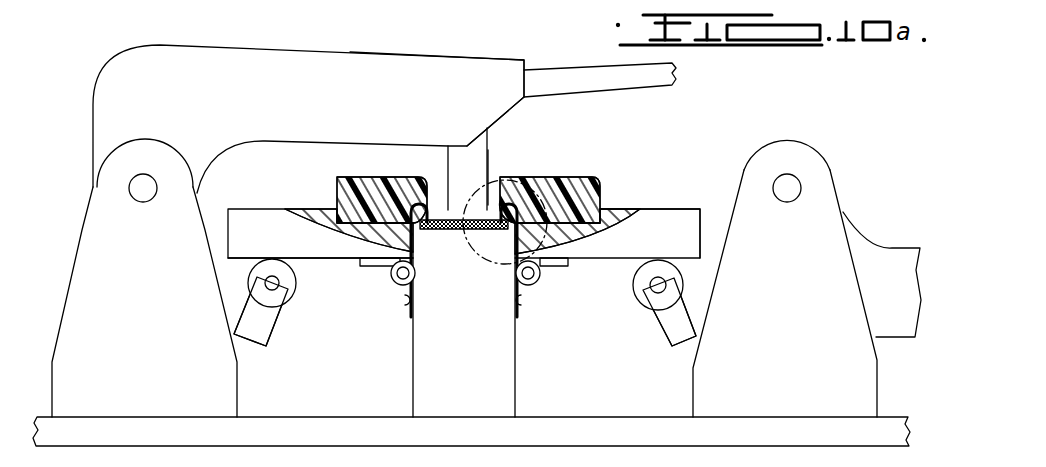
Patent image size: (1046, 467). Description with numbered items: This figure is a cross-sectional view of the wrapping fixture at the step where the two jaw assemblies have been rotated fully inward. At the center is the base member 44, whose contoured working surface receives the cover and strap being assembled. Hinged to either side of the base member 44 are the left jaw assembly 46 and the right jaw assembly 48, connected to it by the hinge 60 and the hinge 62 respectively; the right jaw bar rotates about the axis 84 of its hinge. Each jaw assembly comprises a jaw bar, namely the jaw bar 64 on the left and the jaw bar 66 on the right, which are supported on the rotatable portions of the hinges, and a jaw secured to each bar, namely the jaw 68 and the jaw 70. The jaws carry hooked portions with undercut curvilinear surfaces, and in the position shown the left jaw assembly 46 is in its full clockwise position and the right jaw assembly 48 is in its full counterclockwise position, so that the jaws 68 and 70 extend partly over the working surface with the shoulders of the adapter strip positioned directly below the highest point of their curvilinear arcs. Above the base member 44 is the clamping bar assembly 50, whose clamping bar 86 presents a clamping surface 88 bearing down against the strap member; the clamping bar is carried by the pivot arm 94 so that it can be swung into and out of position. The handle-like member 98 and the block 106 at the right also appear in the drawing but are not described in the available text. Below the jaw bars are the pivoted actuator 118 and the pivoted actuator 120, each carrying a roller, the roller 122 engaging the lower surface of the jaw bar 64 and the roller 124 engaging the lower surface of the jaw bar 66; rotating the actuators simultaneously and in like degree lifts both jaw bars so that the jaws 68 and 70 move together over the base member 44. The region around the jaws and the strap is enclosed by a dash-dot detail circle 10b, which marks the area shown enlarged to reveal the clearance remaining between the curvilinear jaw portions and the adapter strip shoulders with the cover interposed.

The base member 44 is at (478, 348).
The left jaw assembly 46 is at (331, 279).
The right jaw assembly 48 is at (652, 192).
The clamping bar assembly 50 is at (326, 48).
The hinge 60 is at (398, 288).
The hinge 62 is at (534, 284).
The jaw bar 64 is at (348, 262).
The jaw bar 66 is at (620, 261).
The jaw 68 is at (340, 190).
The jaw 70 is at (586, 180).
The axis of hinge 84 is at (516, 274).
The clamping bar 86 is at (490, 166).
The clamping surface 88 is at (460, 155).
The pivot arm 94 is at (437, 62).
The handle 98 is at (557, 75).
The stop block 106 is at (890, 252).
The pivoted actuator 118 is at (290, 330).
The pivoted actuator 120 is at (664, 326).
The roller 122 is at (247, 280).
The roller 124 is at (648, 312).
The detail circle for FIG. 10b is at (538, 183).